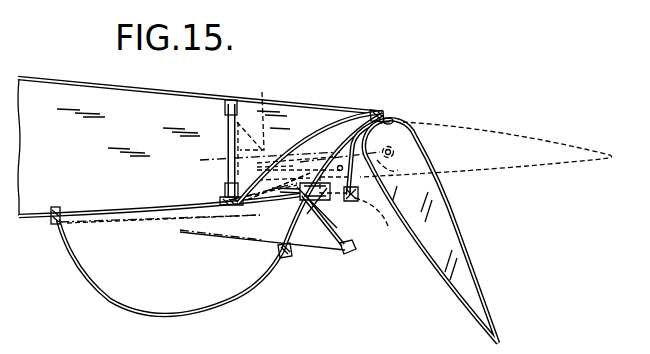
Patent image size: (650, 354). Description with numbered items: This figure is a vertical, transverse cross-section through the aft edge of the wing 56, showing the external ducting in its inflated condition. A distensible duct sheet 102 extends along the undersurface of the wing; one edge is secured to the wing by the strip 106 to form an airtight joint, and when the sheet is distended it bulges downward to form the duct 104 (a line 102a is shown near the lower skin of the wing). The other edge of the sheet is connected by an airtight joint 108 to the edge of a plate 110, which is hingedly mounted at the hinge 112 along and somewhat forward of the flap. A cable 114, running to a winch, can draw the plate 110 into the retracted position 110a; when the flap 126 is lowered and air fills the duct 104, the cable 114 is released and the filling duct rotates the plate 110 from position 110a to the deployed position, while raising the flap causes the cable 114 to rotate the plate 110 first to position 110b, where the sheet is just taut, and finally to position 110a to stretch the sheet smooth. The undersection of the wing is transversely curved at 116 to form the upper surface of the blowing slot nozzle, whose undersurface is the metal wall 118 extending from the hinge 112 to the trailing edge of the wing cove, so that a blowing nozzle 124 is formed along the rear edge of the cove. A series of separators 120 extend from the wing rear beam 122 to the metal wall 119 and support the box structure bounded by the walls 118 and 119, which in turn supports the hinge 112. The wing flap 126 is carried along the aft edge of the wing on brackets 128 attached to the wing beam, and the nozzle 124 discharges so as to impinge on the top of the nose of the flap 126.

The wing 56 is at (79, 82).
The distensible duct sheet 102 is at (247, 288).
The lower skin phantom line 102a is at (115, 228).
The duct 104 is at (198, 281).
The strip 106 is at (55, 226).
The airtight joint 108 is at (287, 258).
The plate 110 is at (293, 216).
The retracted position of plate 110a is at (369, 217).
The intermediate position of plate 110b is at (347, 253).
The hinge 112 is at (314, 196).
The cable 114 is at (298, 224).
The transversely curved undersection of the wing 116 is at (313, 140).
The metal wall 118 is at (347, 145).
The metal wall 119 is at (351, 197).
The separators 120 is at (263, 186).
The wing rear beam 122 is at (222, 136).
The blowing nozzle 124 is at (385, 119).
The wing flap 126 is at (460, 234).
The brackets 128 is at (265, 108).